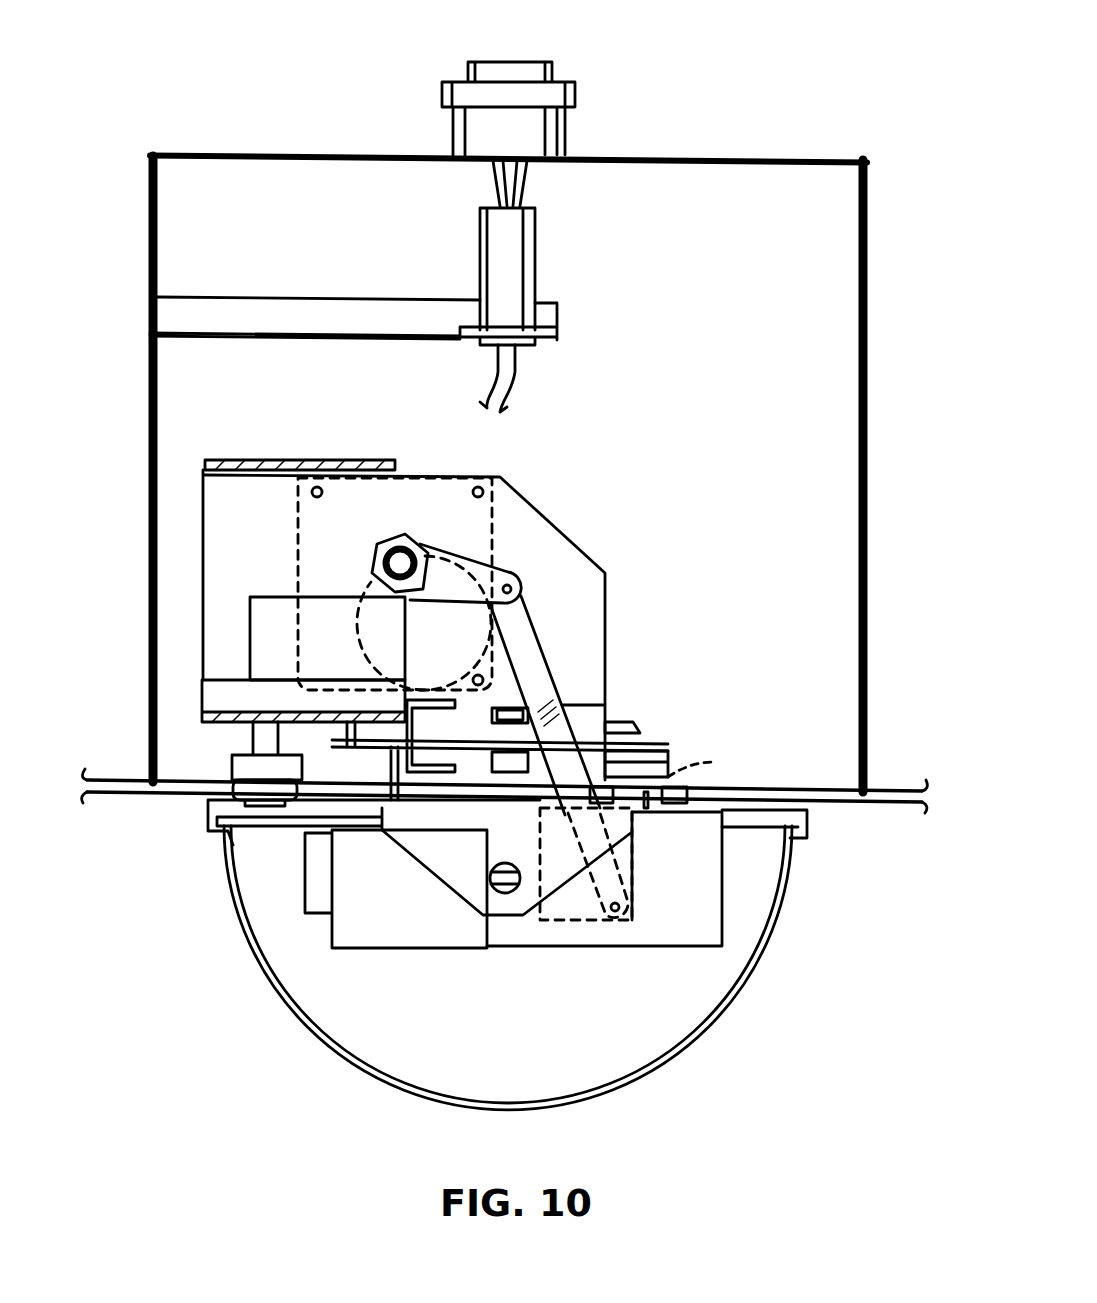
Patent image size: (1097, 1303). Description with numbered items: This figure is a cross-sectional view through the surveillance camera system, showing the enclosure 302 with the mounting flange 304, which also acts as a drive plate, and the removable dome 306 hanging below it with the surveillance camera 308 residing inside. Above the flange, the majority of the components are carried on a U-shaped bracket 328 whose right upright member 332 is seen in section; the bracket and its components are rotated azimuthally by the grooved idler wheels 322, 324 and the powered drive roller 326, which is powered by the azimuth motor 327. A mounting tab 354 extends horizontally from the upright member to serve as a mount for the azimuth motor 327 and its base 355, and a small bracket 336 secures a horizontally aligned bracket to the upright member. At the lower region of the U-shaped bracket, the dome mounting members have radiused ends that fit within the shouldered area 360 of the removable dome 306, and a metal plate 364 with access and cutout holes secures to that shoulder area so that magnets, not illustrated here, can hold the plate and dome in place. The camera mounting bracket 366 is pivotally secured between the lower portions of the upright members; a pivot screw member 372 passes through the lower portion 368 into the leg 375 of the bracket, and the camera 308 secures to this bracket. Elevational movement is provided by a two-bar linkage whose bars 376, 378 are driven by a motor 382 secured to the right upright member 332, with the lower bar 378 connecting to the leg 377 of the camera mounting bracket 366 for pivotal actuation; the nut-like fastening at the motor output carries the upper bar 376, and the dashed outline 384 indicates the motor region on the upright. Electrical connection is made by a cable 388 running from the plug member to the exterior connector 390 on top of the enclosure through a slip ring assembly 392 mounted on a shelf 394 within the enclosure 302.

The enclosure 302 is at (150, 357).
The mounting flange 304 is at (138, 780).
The removable dome 306 is at (777, 922).
The surveillance camera 308 is at (695, 947).
The grooved idler wheel 322 is at (668, 770).
The grooved idler wheel 324 is at (716, 765).
The powered drive roller 326 is at (232, 762).
The azimuth motor 327 is at (297, 597).
The U-shaped bracket 328 is at (313, 460).
The right upright member 332 is at (537, 520).
The small bracket 336 is at (517, 752).
The mounting tab 354 is at (225, 725).
The base 355 is at (227, 678).
The shouldered area 360 is at (795, 840).
The metal plate 364 is at (275, 818).
The camera mounting bracket 366 is at (435, 852).
The lower portion 368 is at (540, 857).
The pivot screw member 372 is at (492, 866).
The leg 375 is at (457, 893).
The bar 376 is at (443, 547).
The leg 377 is at (565, 920).
The lower bar 378 is at (527, 623).
The motor 382 is at (370, 588).
The cam plate 384 is at (298, 530).
The cable 388 is at (513, 390).
The exterior connector 390 is at (567, 130).
The slip ring assembly 392 is at (525, 262).
The shelf 394 is at (352, 337).